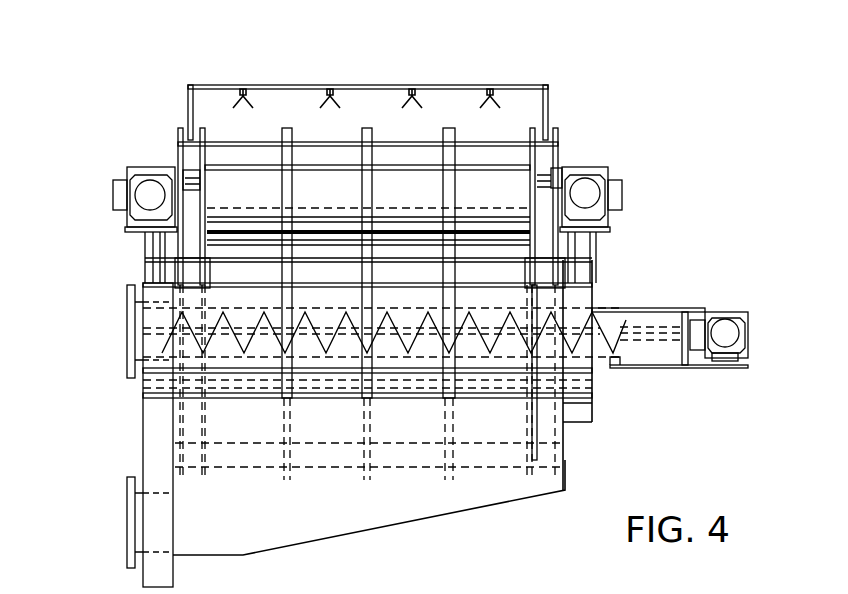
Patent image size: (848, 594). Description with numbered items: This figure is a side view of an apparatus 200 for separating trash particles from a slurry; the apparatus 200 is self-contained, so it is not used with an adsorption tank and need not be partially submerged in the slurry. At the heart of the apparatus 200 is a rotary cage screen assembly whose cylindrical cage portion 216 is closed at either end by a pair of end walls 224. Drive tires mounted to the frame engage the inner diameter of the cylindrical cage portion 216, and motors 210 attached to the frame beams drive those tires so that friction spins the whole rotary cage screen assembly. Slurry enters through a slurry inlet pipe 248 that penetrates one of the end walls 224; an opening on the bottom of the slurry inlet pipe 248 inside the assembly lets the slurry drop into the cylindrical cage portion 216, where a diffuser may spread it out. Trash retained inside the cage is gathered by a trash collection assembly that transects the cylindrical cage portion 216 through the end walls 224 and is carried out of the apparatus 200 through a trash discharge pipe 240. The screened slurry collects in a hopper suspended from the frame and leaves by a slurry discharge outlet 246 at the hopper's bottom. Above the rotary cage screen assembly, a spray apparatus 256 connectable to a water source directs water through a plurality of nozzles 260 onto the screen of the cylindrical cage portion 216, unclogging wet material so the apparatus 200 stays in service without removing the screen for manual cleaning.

The apparatus 200 is at (135, 62).
The spray apparatus 256 is at (547, 82).
The nozzles 260 is at (340, 100).
The motors 210 is at (600, 166).
The end walls 224 is at (200, 272).
The cylindrical cage portion 216 is at (403, 473).
The slurry inlet pipe 248 is at (128, 345).
The slurry discharge outlet 246 is at (128, 522).
The trash discharge pipe 240 is at (668, 308).